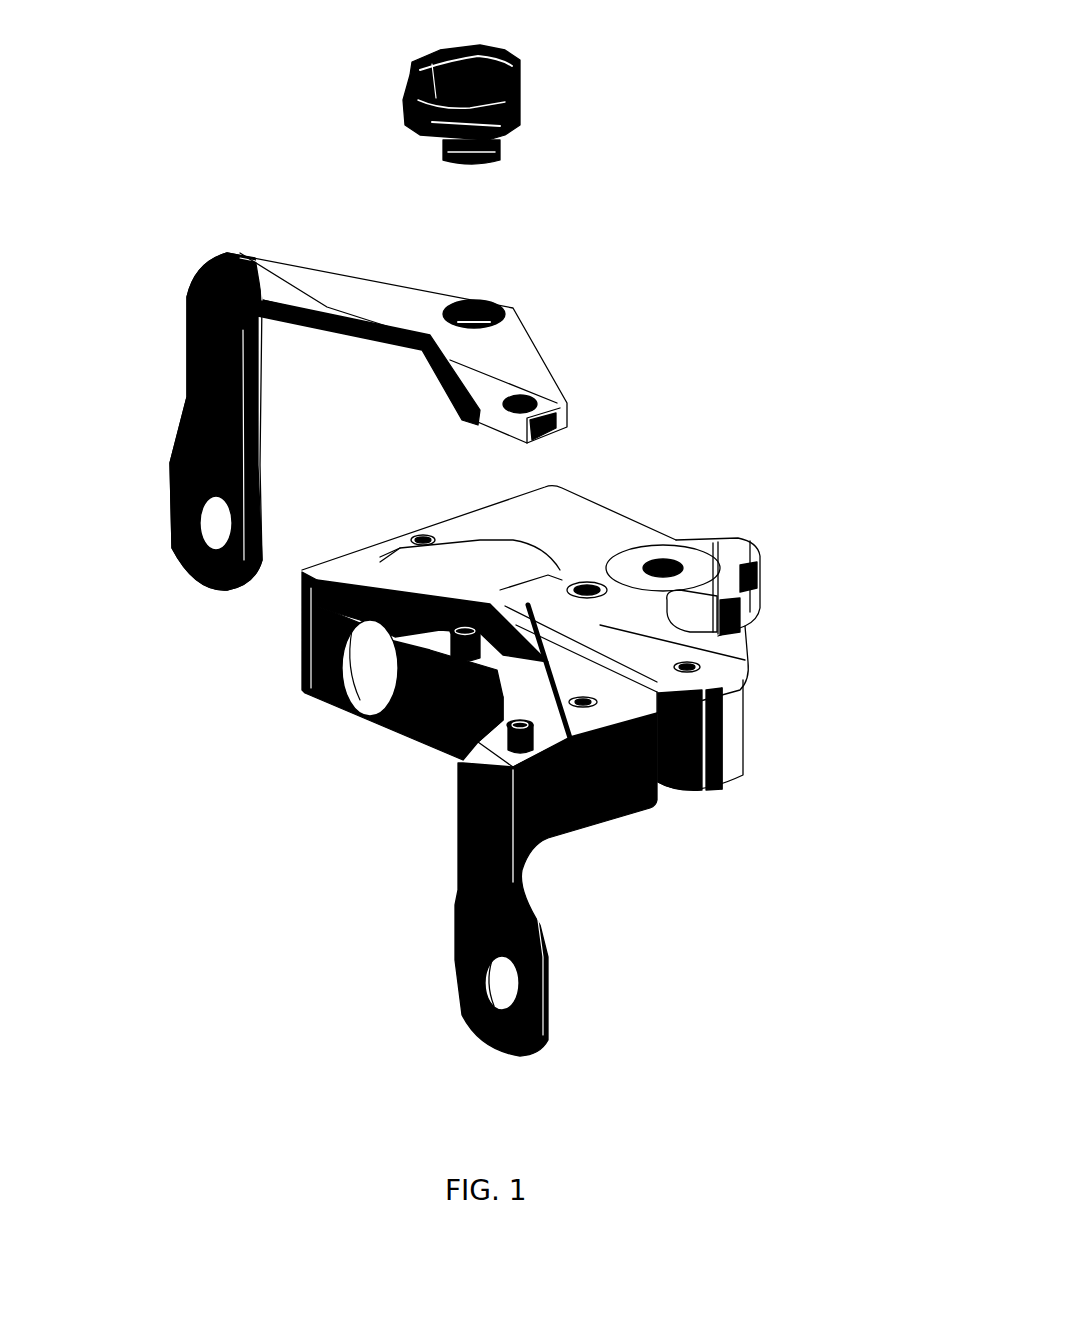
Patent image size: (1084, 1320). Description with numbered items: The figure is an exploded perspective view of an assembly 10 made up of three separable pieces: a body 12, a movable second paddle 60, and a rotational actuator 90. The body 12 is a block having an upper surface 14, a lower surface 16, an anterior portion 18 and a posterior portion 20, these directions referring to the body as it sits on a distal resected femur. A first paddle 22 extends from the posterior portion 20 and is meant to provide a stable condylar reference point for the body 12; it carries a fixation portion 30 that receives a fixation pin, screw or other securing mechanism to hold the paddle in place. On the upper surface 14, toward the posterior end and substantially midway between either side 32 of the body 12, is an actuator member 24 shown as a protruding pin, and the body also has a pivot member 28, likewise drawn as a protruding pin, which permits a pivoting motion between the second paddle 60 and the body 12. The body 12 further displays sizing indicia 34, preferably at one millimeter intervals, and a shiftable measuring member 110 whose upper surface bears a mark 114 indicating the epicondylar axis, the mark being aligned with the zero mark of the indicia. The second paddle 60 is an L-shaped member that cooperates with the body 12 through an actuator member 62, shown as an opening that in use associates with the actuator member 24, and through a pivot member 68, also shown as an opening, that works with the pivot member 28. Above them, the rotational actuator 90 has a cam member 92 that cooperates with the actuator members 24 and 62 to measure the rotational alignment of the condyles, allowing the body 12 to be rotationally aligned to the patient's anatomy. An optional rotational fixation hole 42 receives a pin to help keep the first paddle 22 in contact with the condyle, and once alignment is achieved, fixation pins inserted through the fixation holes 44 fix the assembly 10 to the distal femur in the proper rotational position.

The assembly 10 is at (885, 174).
The body 12 is at (328, 657).
The upper surface 14 is at (650, 499).
The lower surface 16 is at (563, 868).
The anterior portion 18 is at (697, 527).
The posterior portion 20 is at (403, 742).
The first paddle 22 is at (548, 968).
The actuator member 24 is at (463, 628).
The pivot member 28 is at (512, 748).
The fixation portion 30 is at (512, 990).
The side 32 is at (472, 510).
The sizing indicia 34 is at (528, 600).
The rotational fixation hole 42 is at (592, 706).
The fixation holes 44 is at (640, 717).
The second paddle 60 is at (220, 283).
The actuator member 62 is at (485, 318).
The pivot member 68 is at (528, 404).
The rotational actuator 90 is at (415, 70).
The cam member 92 is at (500, 150).
The shiftable measuring member 110 is at (712, 648).
The mark 114 is at (697, 612).